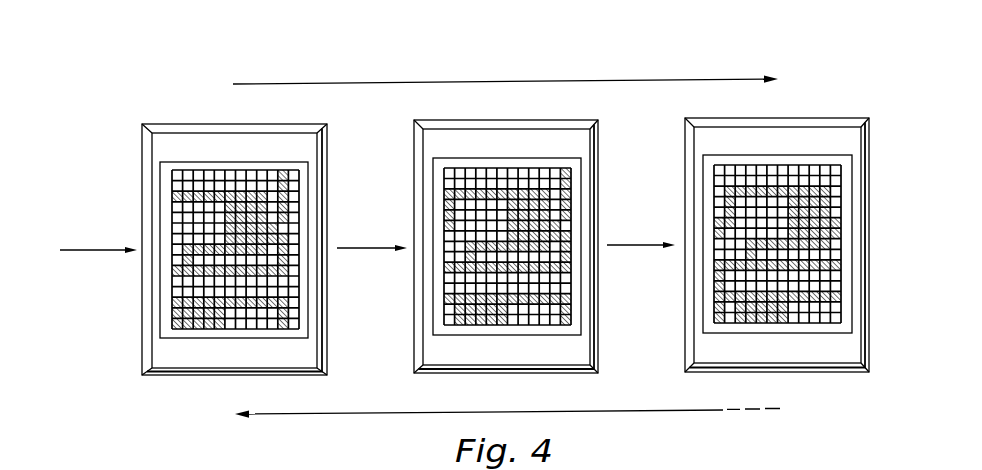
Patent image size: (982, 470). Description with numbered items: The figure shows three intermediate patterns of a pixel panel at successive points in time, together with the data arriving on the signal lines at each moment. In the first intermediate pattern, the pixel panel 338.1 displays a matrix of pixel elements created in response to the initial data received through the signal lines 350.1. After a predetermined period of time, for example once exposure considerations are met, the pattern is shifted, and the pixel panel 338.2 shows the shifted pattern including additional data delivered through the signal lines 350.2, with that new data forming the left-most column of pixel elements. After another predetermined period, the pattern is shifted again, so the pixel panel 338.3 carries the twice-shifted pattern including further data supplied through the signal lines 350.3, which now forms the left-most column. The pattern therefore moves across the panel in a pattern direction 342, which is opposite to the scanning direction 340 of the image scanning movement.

The pixel panel (first intermediate pattern) 338.1 is at (172, 123).
The pixel panel (second intermediate pattern) 338.2 is at (604, 150).
The pixel panel (third intermediate pattern) 338.3 is at (843, 117).
The pattern direction 342 is at (285, 83).
The scanning direction 340 is at (373, 411).
The signal lines (first point in time) 350.1 is at (92, 253).
The signal lines (second point in time) 350.2 is at (370, 251).
The signal lines (third point in time) 350.3 is at (642, 248).